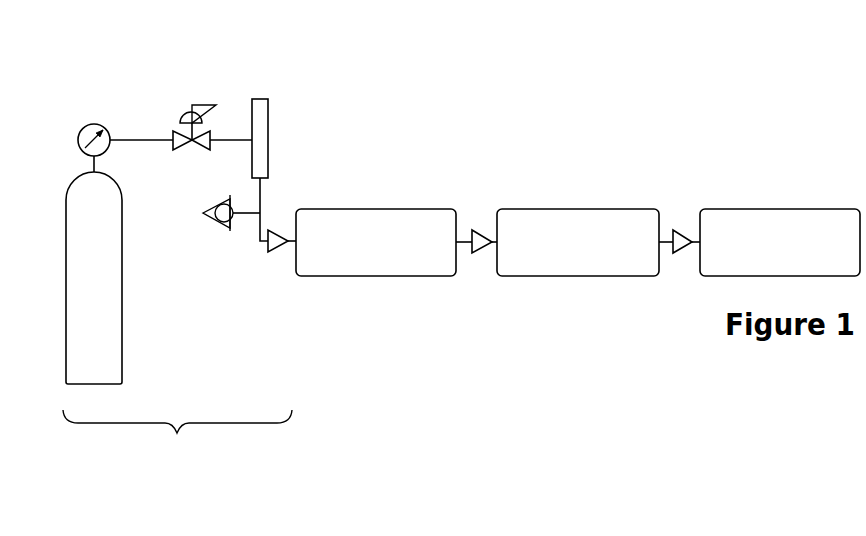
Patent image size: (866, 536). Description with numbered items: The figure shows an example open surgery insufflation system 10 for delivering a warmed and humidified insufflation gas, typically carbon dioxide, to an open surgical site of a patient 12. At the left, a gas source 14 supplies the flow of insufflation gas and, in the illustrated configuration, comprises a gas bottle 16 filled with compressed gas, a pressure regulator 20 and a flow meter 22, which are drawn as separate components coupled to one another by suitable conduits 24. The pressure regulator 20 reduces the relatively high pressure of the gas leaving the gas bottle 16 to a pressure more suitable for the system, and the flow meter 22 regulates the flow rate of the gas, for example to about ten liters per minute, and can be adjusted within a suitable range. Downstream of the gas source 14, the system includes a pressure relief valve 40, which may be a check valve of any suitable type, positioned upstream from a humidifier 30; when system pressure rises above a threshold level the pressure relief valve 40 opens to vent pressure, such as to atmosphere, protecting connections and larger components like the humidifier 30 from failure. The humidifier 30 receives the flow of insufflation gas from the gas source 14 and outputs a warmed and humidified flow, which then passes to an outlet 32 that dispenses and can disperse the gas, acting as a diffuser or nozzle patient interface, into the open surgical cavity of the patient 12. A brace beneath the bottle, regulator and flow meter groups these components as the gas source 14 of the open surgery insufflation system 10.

The open surgery insufflation system 10 is at (629, 84).
The patient 12 is at (762, 210).
The gas source 14 is at (179, 298).
The gas bottle 16 is at (123, 307).
The pressure regulator 20 is at (193, 152).
The flow meter 22 is at (268, 128).
The conduits 24 is at (138, 138).
The humidifier 30 is at (351, 210).
The outlet 32 is at (573, 210).
The pressure relief valve 40 is at (218, 222).